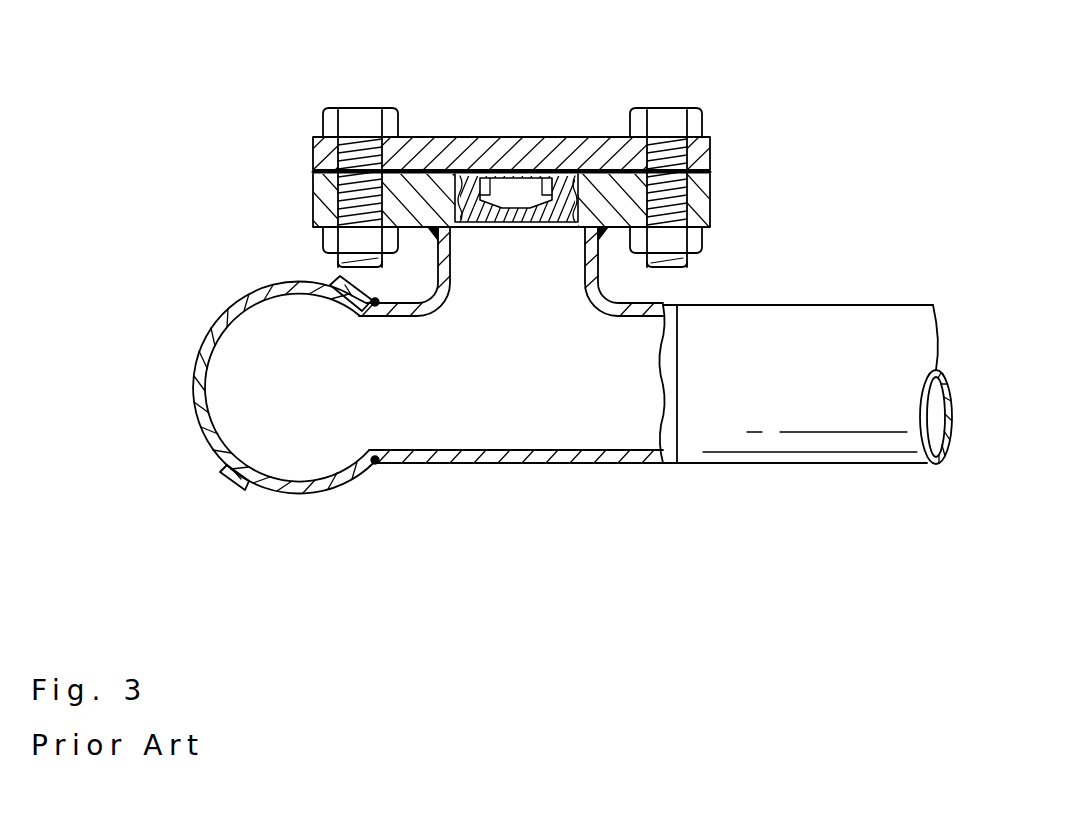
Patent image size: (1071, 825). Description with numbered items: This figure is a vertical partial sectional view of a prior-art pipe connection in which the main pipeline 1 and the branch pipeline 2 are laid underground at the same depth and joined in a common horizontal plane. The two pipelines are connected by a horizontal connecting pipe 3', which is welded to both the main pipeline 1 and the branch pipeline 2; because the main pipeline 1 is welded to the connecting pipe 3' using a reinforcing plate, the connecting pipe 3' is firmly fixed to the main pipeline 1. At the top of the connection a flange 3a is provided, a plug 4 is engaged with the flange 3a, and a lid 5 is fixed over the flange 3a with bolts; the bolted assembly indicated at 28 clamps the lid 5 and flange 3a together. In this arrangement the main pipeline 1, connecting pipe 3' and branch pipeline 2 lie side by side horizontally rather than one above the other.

The main pipeline 1 is at (243, 481).
The branch pipeline 2 is at (815, 442).
The connecting pipe 3' is at (506, 403).
The flange 3a is at (710, 204).
The plug 4 is at (543, 137).
The lid 5 is at (480, 137).
The bolt connection 28 is at (607, 137).